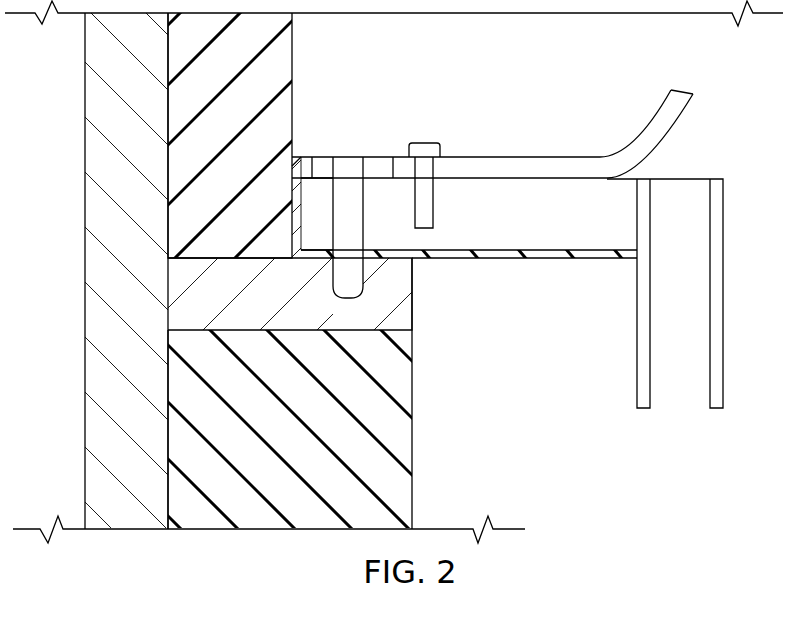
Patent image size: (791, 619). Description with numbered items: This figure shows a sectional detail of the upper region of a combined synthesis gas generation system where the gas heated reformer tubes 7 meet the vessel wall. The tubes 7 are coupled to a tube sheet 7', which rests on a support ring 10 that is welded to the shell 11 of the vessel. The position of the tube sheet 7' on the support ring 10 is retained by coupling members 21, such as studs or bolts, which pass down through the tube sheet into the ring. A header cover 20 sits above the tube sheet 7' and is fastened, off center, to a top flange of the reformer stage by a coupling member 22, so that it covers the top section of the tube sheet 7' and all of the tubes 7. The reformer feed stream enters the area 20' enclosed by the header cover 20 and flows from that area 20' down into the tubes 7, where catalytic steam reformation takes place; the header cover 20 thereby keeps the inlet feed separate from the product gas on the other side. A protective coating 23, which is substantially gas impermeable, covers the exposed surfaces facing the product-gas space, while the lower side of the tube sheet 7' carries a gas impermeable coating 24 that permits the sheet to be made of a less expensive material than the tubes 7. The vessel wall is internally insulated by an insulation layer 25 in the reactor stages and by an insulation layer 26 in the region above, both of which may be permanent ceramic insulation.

The tubes 7 is at (665, 293).
The tube sheet 7' is at (402, 214).
The support ring 10 is at (264, 308).
The shell 11 is at (115, 283).
The header cover 20 is at (693, 69).
The area enclosed by the header cover 20' is at (671, 140).
The coupling members 21 is at (348, 162).
The coupling member 22 is at (424, 144).
The protective coating 23 is at (553, 157).
The gas impermeable coating 24 is at (525, 260).
The insulation layer 25 is at (277, 447).
The insulation layer 26 is at (216, 148).